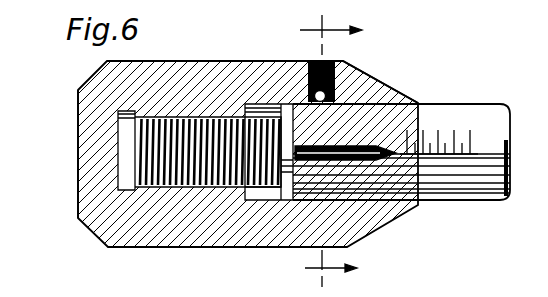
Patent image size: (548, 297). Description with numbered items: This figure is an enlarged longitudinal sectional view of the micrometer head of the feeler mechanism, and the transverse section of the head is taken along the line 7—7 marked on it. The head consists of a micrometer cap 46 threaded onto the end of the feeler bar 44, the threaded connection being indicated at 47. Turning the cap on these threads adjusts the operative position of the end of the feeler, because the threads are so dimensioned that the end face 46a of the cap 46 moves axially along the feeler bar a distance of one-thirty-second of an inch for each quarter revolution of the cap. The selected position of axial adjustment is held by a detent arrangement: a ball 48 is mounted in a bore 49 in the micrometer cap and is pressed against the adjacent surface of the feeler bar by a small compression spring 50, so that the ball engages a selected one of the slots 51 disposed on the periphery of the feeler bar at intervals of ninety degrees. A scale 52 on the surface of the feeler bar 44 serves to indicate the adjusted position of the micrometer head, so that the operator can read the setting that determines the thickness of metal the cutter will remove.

The section line 7— 7 is at (323, 151).
The feeler bar 44 is at (467, 110).
The micrometer cap 46 is at (213, 61).
The end face of the cap 46a is at (78, 124).
The threads 47 is at (213, 188).
The ball 48 is at (320, 103).
The bore 49 is at (340, 85).
The compression spring 50 is at (330, 66).
The slots 51 is at (355, 146).
The scale 52 is at (478, 141).